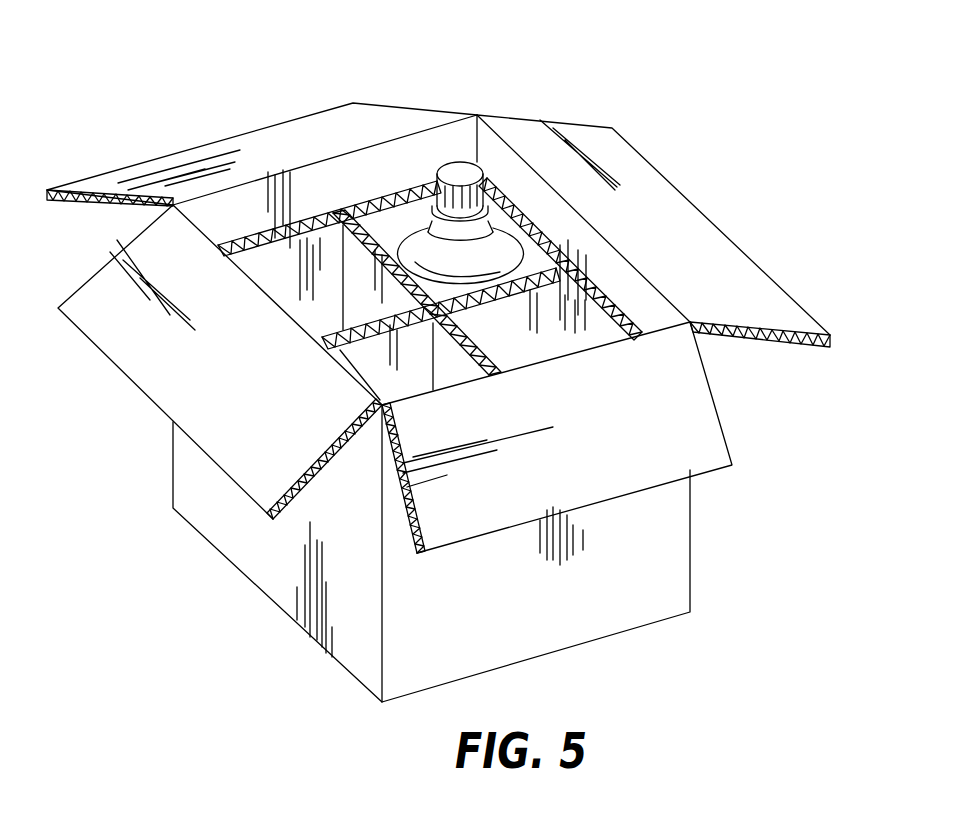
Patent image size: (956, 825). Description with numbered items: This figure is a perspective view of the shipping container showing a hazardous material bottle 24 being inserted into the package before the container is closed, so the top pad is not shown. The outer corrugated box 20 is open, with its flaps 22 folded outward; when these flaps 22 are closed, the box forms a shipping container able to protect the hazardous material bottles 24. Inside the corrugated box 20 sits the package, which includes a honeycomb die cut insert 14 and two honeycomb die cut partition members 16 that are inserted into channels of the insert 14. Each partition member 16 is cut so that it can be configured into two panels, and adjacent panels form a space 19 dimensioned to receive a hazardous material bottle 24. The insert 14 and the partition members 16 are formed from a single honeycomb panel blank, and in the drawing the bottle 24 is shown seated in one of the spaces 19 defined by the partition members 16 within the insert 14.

The honeycomb die cut insert 14 is at (600, 293).
The honeycomb die cut partition member 16 is at (480, 337).
The space 19 is at (291, 288).
The corrugated box 20 is at (658, 557).
The flaps 22 is at (196, 381).
The hazardous material bottle 24 is at (543, 265).